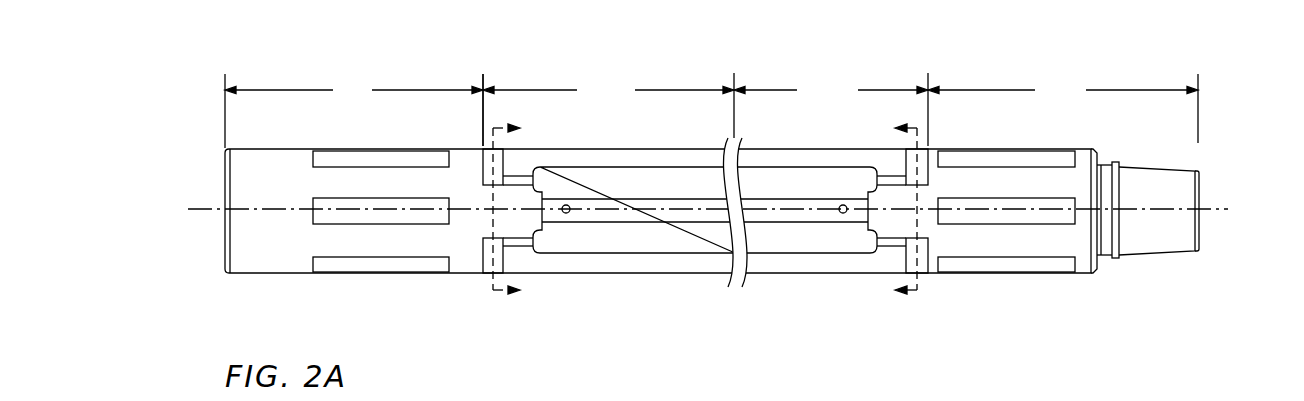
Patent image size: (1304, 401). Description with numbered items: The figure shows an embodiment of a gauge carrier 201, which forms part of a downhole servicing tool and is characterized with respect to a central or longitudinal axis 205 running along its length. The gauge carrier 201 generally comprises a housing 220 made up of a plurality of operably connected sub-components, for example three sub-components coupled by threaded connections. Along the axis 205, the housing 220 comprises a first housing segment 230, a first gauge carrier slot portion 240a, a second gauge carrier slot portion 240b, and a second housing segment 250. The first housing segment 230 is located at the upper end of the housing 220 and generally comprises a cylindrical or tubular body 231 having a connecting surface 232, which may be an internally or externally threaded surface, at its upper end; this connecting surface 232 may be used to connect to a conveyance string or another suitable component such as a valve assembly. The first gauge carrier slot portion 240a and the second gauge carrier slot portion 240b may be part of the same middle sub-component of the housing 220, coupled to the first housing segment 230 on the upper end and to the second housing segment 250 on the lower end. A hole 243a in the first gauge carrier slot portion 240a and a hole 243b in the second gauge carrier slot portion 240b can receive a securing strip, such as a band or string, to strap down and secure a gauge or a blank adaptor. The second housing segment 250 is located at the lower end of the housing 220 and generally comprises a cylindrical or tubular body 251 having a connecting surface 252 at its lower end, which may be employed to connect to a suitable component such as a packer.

The gauge carrier 201 is at (389, 56).
The central or longitudinal axis 205 is at (207, 211).
The housing 220 is at (258, 275).
The first housing segment 230 is at (380, 148).
The cylindrical or tubular body 231 is at (422, 148).
The connecting surface 232 is at (227, 183).
The first gauge carrier slot portion 240a is at (633, 149).
The second gauge carrier slot portion 240b is at (855, 149).
The hole 243a is at (566, 214).
The hole 243b is at (843, 214).
The second housing segment 250 is at (1037, 148).
The cylindrical or tubular body 251 is at (950, 149).
The connecting surface 252 is at (1148, 167).